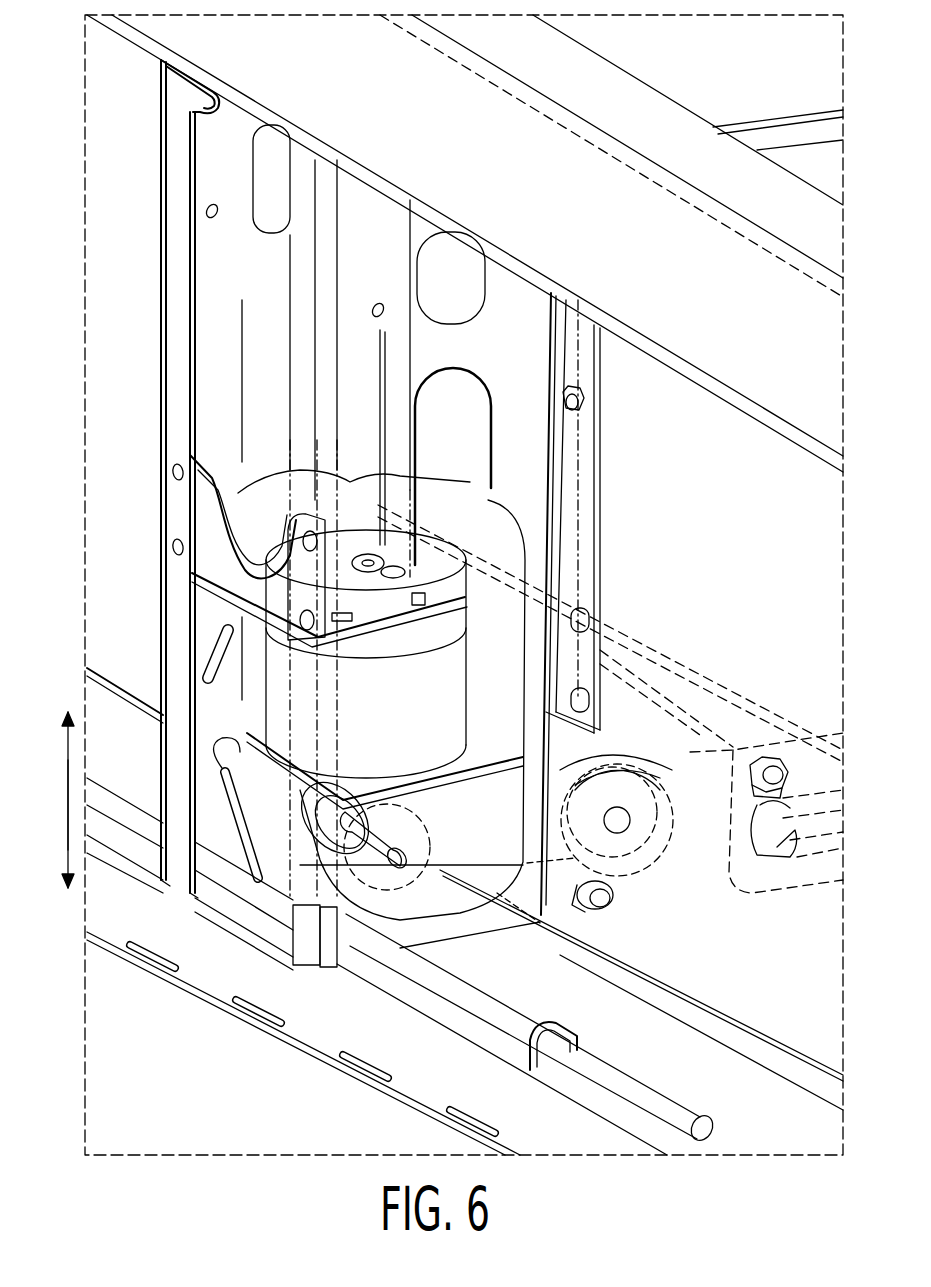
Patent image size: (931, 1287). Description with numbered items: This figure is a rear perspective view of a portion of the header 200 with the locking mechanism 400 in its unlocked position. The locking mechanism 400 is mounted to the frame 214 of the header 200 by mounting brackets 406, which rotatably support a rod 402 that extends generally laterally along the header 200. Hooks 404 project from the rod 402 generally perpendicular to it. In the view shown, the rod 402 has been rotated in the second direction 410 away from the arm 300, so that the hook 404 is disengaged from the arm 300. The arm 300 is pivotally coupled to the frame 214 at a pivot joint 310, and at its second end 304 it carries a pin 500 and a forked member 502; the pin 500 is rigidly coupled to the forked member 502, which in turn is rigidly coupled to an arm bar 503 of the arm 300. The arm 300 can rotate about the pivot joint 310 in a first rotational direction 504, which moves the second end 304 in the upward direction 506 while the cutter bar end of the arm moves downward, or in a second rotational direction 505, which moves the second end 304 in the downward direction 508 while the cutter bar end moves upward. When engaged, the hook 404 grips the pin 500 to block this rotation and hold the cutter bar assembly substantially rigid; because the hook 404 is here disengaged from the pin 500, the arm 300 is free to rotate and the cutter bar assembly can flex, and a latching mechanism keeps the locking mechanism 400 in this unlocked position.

The header 200 is at (716, 77).
The frame 214 is at (295, 1050).
The arm 300 is at (722, 945).
The second end 304 is at (135, 660).
The pivot joint 310 is at (625, 848).
The locking mechanism 400 is at (458, 1027).
The rod 402 is at (640, 1070).
The hook 404 is at (240, 880).
The mounting bracket 406 is at (565, 1035).
The second direction 410 is at (757, 1078).
The pin 500 is at (392, 838).
The forked member 502 is at (465, 862).
The arm bar 503 is at (695, 705).
The first rotational direction 504 is at (665, 825).
The second rotational direction 505 is at (640, 765).
The upward direction 506 is at (66, 760).
The downward direction 508 is at (66, 850).